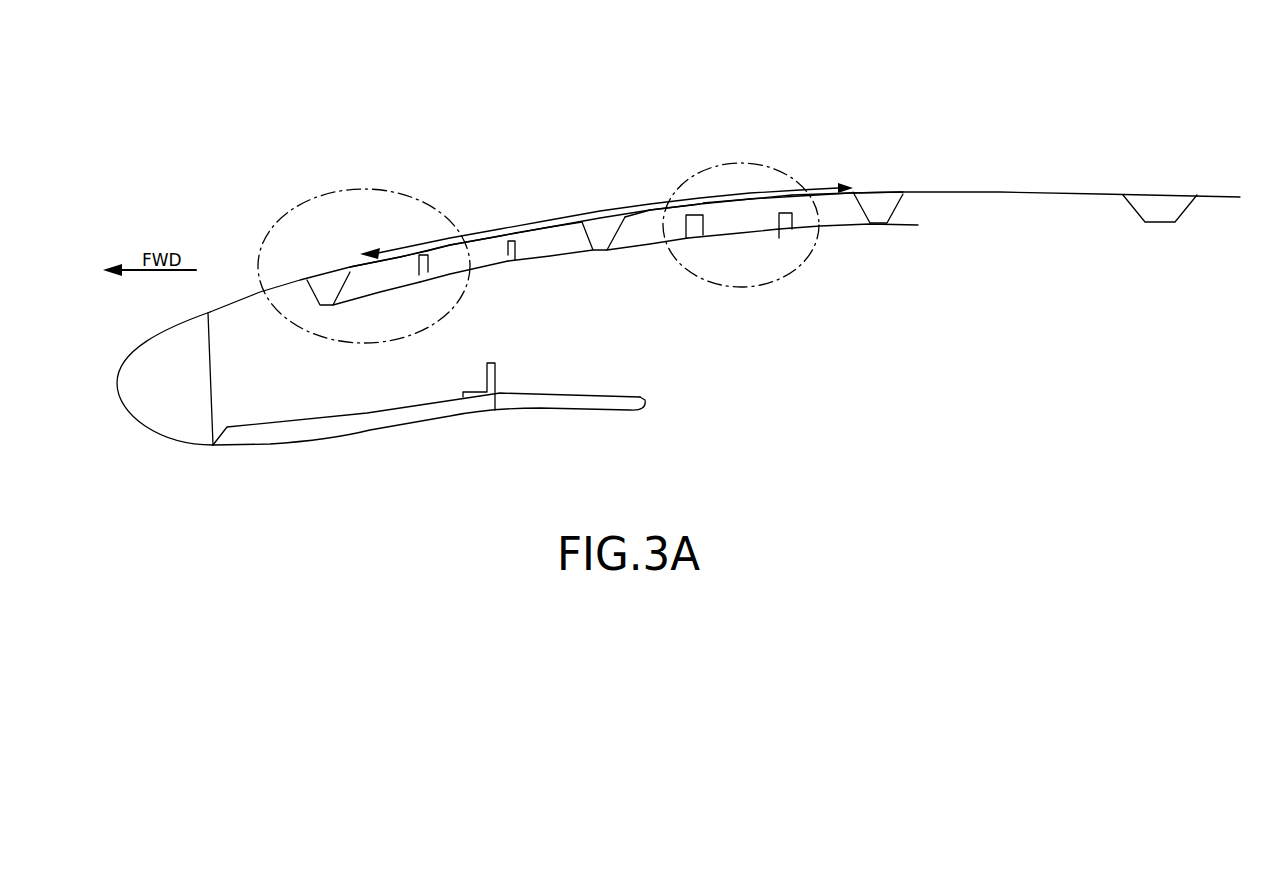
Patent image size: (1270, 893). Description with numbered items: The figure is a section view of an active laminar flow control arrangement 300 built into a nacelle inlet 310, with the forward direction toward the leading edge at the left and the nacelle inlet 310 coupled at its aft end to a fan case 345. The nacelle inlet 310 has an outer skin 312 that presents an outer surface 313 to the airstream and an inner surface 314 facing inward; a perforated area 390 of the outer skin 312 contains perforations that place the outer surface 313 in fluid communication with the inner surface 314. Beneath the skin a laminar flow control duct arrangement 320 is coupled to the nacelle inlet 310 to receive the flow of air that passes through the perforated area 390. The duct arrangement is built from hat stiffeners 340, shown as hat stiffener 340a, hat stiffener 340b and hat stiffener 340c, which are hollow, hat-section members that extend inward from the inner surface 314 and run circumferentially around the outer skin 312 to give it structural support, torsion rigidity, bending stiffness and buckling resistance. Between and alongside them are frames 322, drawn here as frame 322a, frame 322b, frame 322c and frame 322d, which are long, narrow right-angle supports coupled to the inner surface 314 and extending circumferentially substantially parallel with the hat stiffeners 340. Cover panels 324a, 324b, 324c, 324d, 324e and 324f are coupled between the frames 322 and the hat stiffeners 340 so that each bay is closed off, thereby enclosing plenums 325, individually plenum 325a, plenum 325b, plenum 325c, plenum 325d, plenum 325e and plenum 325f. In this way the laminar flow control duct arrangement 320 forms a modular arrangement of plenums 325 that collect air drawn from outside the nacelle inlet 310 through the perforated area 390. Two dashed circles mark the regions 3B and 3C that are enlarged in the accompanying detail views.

The active laminar flow control arrangement 300 is at (458, 124).
The nacelle inlet 310 is at (258, 296).
The outer skin 312 is at (725, 207).
The outer surface 313 is at (224, 302).
The inner surface 314 is at (264, 305).
The laminar flow control duct arrangement 320 is at (846, 360).
The frames 322 is at (484, 302).
The frame 322a is at (417, 282).
The frame 322b is at (509, 258).
The frame 322c is at (683, 243).
The frame 322d is at (778, 242).
The cover panel 324a is at (366, 297).
The cover panel 324b is at (442, 277).
The cover panel 324c is at (550, 263).
The cover panel 324d is at (633, 247).
The cover panel 324e is at (715, 240).
The cover panel 324f is at (837, 228).
The plenums 325 is at (924, 214).
The plenum 325a is at (393, 275).
The plenum 325b is at (467, 245).
The plenum 325c is at (553, 247).
The plenum 325d is at (663, 227).
The plenum 325e is at (760, 217).
The plenum 325f is at (857, 220).
The hat stiffeners 340 is at (906, 163).
The hat stiffener 340a is at (330, 302).
The hat stiffener 340b is at (596, 252).
The hat stiffener 340c is at (890, 221).
The fan case 345 is at (547, 400).
The perforated area 390 is at (593, 213).
The detail view 3B region 3B is at (315, 194).
The detail view 3C region 3C is at (689, 165).